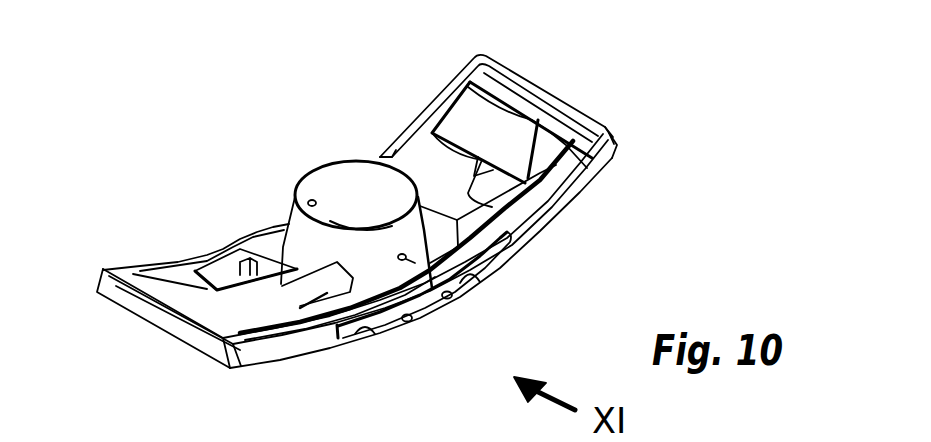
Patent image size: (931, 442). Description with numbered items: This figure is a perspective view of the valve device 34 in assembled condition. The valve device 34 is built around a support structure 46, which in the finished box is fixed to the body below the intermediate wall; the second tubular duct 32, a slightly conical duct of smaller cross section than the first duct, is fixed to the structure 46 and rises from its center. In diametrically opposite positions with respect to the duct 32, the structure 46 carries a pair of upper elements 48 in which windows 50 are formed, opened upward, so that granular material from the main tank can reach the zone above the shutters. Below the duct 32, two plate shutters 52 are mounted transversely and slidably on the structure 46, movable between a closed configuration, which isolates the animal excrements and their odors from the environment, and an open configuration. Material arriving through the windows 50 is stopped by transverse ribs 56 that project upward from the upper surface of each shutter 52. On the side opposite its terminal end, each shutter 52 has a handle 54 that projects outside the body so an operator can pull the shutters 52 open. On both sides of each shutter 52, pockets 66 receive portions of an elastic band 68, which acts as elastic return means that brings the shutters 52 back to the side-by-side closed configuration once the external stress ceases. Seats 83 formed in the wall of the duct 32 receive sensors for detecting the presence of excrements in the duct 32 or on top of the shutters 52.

The second tubular duct 32 is at (369, 188).
The valve device 34 is at (191, 229).
The support structure 46 is at (427, 180).
The upper elements 48 is at (391, 156).
The windows 50 is at (524, 118).
The plate shutter 52 is at (280, 366).
The handle 54 is at (143, 302).
The transverse ribs 56 is at (200, 288).
The pockets 66 is at (507, 234).
The elastic band 68 is at (487, 265).
The seats 83 is at (316, 206).